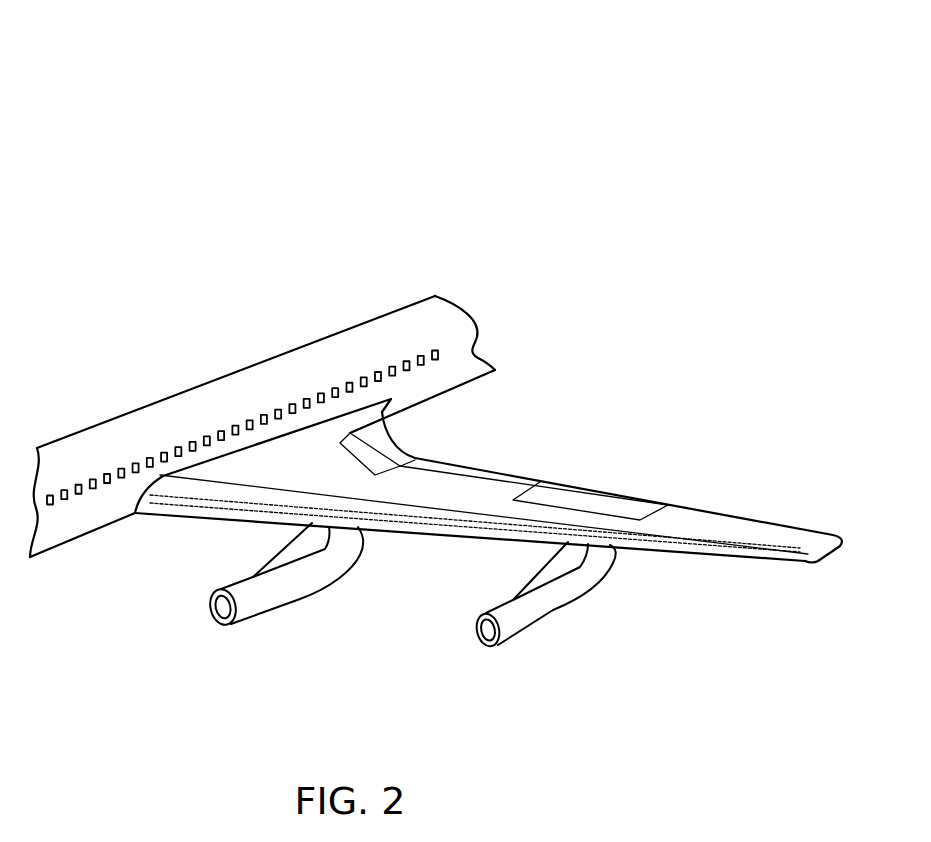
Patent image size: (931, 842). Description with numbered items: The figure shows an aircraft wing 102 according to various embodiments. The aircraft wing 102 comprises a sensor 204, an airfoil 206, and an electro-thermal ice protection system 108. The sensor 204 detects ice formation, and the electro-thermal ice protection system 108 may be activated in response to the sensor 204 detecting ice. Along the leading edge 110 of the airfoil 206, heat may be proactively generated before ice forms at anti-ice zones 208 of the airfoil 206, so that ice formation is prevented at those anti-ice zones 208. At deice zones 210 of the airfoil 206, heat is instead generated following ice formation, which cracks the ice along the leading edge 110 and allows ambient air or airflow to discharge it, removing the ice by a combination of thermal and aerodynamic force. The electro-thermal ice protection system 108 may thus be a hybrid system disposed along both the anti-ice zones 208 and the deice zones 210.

The aircraft wing 102 is at (110, 150).
The electro-thermal ice protection system 108 is at (395, 493).
The leading edge 110 is at (655, 547).
The sensor 204 is at (164, 511).
The airfoil 206 is at (693, 523).
The anti-ice zones 208 is at (460, 535).
The deice zones 210 is at (373, 530).